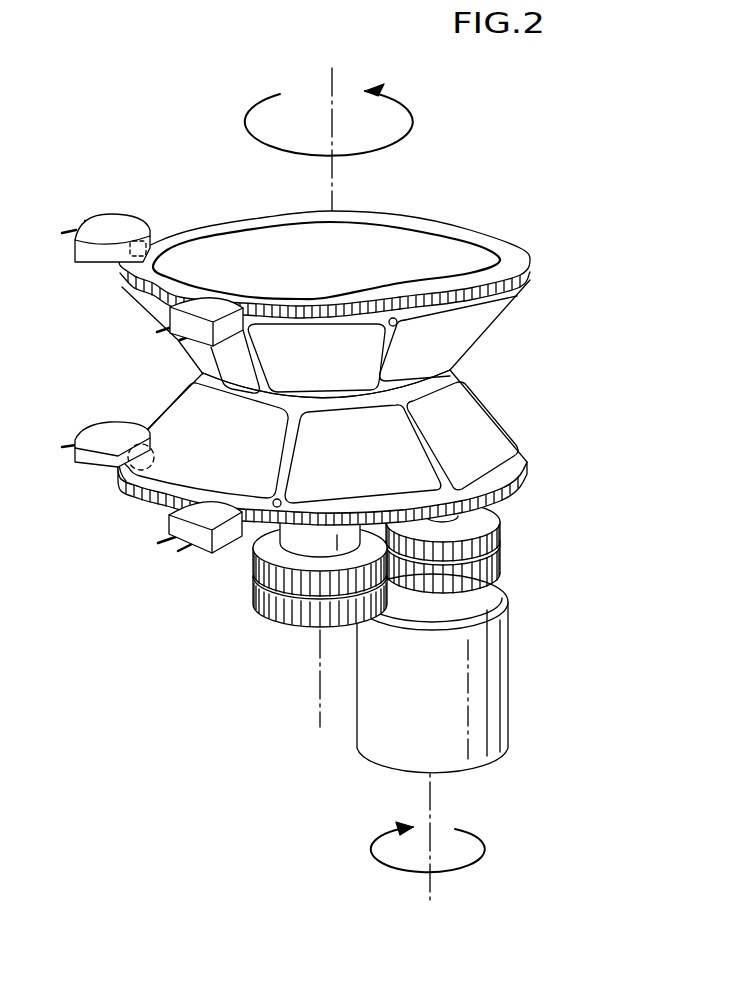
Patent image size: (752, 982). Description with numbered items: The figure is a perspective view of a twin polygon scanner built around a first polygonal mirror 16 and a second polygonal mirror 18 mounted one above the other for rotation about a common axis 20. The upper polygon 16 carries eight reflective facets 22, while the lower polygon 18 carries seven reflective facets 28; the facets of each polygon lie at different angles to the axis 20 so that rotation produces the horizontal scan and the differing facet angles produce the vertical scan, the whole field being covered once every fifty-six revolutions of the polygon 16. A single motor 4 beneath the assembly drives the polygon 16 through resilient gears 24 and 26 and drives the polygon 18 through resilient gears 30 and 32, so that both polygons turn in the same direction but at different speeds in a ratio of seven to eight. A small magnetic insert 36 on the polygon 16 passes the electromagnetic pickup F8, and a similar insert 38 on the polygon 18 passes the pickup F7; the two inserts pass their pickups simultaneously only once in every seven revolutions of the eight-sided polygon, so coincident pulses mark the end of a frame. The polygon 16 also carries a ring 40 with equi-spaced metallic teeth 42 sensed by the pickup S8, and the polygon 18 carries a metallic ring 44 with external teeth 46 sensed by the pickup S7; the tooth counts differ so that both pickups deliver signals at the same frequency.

The motor 4 is at (495, 672).
The first polygonal mirror 16 is at (547, 302).
The second polygonal mirror 18 is at (525, 434).
The common axis 20 is at (335, 184).
The reflective facets 22 is at (336, 370).
The gear 24 is at (503, 568).
The gear 26 is at (257, 608).
The reflective facets 28 is at (241, 453).
The gear 30 is at (497, 540).
The gear 32 is at (255, 573).
The magnetic insert 36 is at (389, 318).
The magnetic insert 38 is at (281, 497).
The ring 40 is at (238, 222).
The metallic teeth 42 is at (140, 294).
The metallic ring 44 is at (157, 503).
The metallic teeth 46 is at (128, 490).
The electromagnetic pickup S8 is at (127, 222).
The electromagnetic pickup S7 is at (120, 433).
The electromagnetic pickup F8 is at (213, 303).
The electromagnetic pickup F7 is at (213, 508).